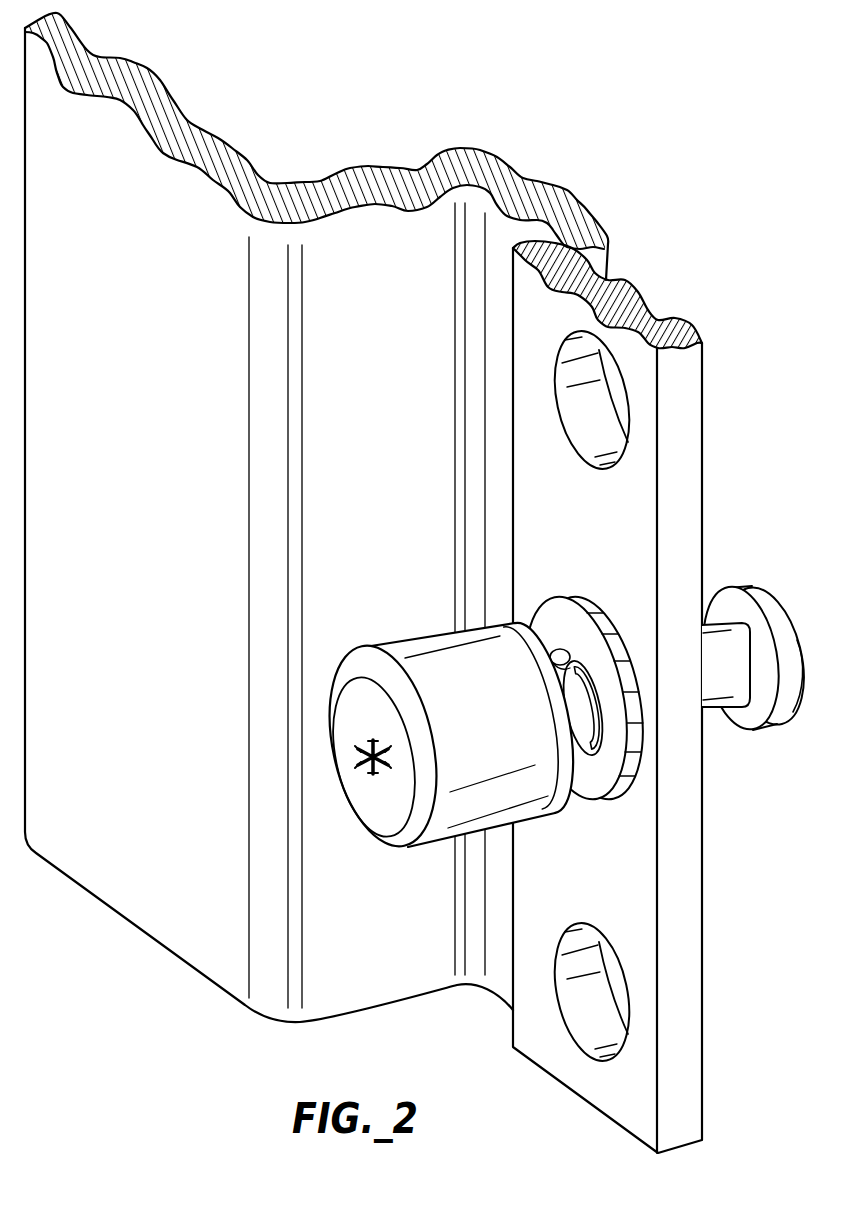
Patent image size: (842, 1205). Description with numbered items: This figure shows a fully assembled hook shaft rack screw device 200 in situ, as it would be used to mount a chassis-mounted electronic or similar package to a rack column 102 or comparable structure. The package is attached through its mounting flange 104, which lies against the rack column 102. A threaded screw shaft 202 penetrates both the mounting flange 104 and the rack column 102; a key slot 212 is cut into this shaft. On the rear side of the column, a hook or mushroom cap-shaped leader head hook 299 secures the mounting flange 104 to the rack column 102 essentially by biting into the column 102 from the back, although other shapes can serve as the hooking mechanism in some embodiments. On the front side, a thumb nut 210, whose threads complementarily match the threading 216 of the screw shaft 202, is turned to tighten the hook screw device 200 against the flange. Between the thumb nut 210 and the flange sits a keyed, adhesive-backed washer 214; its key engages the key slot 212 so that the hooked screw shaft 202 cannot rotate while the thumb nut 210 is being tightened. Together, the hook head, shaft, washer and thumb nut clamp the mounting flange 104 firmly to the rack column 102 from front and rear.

The rack column 102 is at (407, 455).
The mounting flange 104 is at (599, 872).
The hook shaft rack screw device 200 is at (764, 563).
The threaded screw shaft 202 is at (742, 670).
The thumb nut 210 is at (512, 753).
The key slot 212 is at (573, 663).
The keyed adhesive-backed washer 214 is at (602, 783).
The threading 216 is at (576, 677).
The leader head hook 299 is at (788, 702).